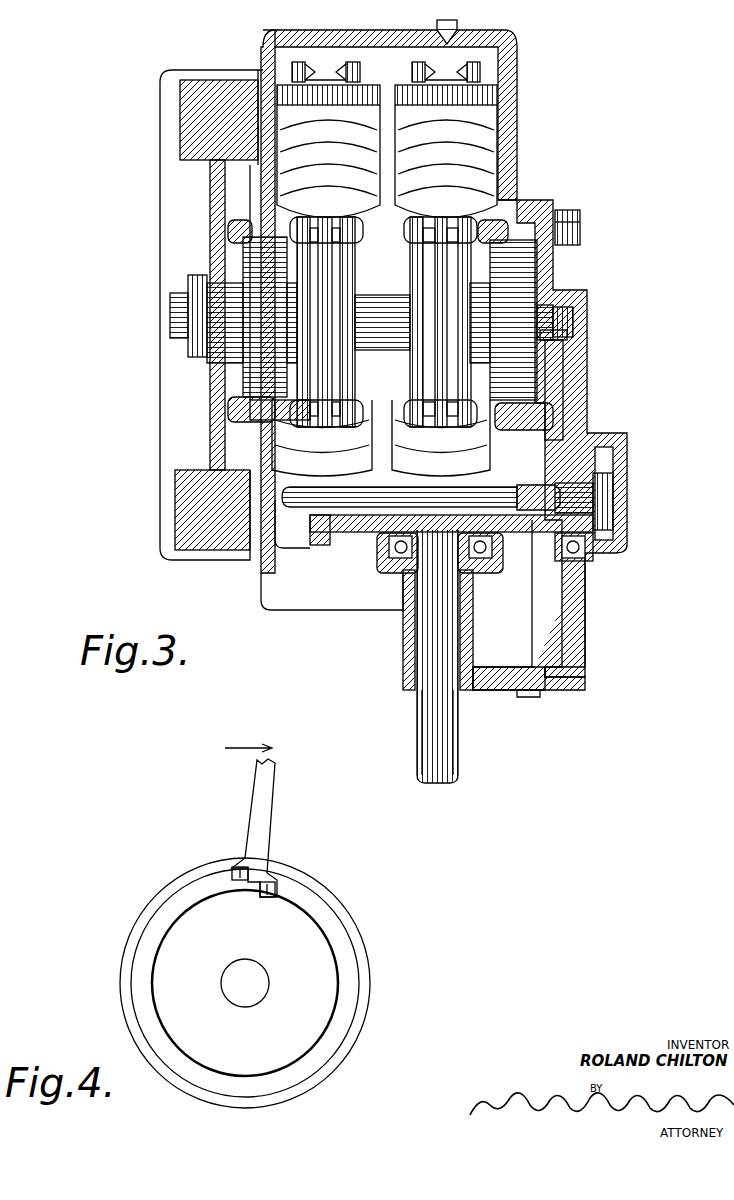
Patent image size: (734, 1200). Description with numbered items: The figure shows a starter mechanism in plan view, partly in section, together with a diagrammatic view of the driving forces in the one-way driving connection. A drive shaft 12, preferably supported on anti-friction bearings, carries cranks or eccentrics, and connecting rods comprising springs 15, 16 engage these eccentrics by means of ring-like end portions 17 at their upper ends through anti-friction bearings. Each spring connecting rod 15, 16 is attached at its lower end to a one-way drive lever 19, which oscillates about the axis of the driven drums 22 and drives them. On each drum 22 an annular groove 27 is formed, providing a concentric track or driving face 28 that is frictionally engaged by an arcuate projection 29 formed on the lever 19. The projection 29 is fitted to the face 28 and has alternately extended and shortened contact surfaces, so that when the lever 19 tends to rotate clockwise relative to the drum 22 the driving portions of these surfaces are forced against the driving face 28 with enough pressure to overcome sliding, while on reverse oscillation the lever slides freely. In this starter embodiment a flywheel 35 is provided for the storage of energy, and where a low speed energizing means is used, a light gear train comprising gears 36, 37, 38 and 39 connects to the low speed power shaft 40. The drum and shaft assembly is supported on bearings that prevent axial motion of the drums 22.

In FIG. 3, the drive shaft 12 is at (390, 300).
In FIG. 3, the spring connecting rod 15 is at (398, 100).
In FIG. 3, the spring connecting rod 16 is at (450, 462).
In FIG. 3, the ring-like end portion 17 is at (440, 357).
In FIG. 4, the one-way drive lever 19 is at (265, 818).
In FIG. 3, the driven drum 22 is at (353, 63).
In FIG. 4, the driven drum 22 is at (338, 908).
In FIG. 4, the annular groove 27 is at (350, 965).
In FIG. 4, the driving face 28 is at (345, 932).
In FIG. 4, the arcuate projection 29 is at (230, 880).
In FIG. 3, the flywheel 35 is at (200, 97).
In FIG. 3, the gear 36 is at (560, 317).
In FIG. 3, the gear 37 is at (557, 380).
In FIG. 3, the gear 38 is at (537, 530).
In FIG. 3, the gear 39 is at (373, 523).
In FIG. 3, the low speed power shaft 40 is at (458, 745).